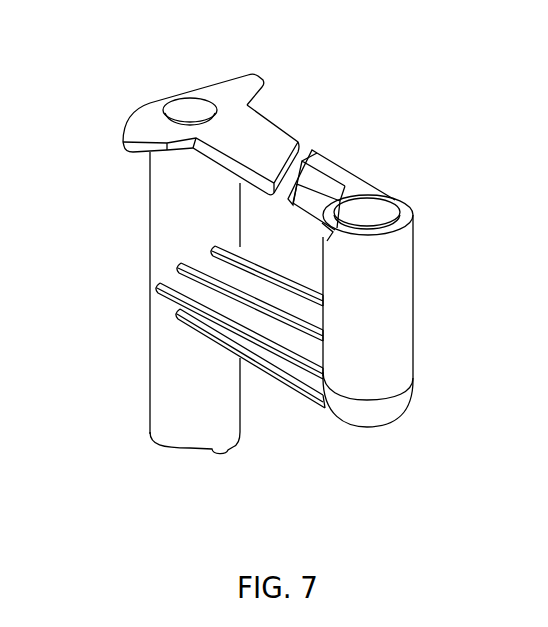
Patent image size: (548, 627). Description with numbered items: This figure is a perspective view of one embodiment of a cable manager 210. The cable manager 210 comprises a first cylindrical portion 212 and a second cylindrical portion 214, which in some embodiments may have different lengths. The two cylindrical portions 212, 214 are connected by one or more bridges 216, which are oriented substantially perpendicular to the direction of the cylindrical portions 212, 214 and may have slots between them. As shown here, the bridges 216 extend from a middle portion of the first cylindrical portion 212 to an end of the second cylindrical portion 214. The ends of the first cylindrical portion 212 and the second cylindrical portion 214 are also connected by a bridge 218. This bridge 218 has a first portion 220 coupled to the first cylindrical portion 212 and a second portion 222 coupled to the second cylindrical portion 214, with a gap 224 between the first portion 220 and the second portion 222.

The cable manager 210 is at (118, 73).
The first cylindrical portion 212 is at (160, 188).
The second cylindrical portion 214 is at (385, 312).
The bridges 216 is at (303, 298).
The bridge 218 is at (251, 71).
The first portion 220 is at (263, 133).
The second portion 222 is at (340, 190).
The gap 224 is at (298, 166).